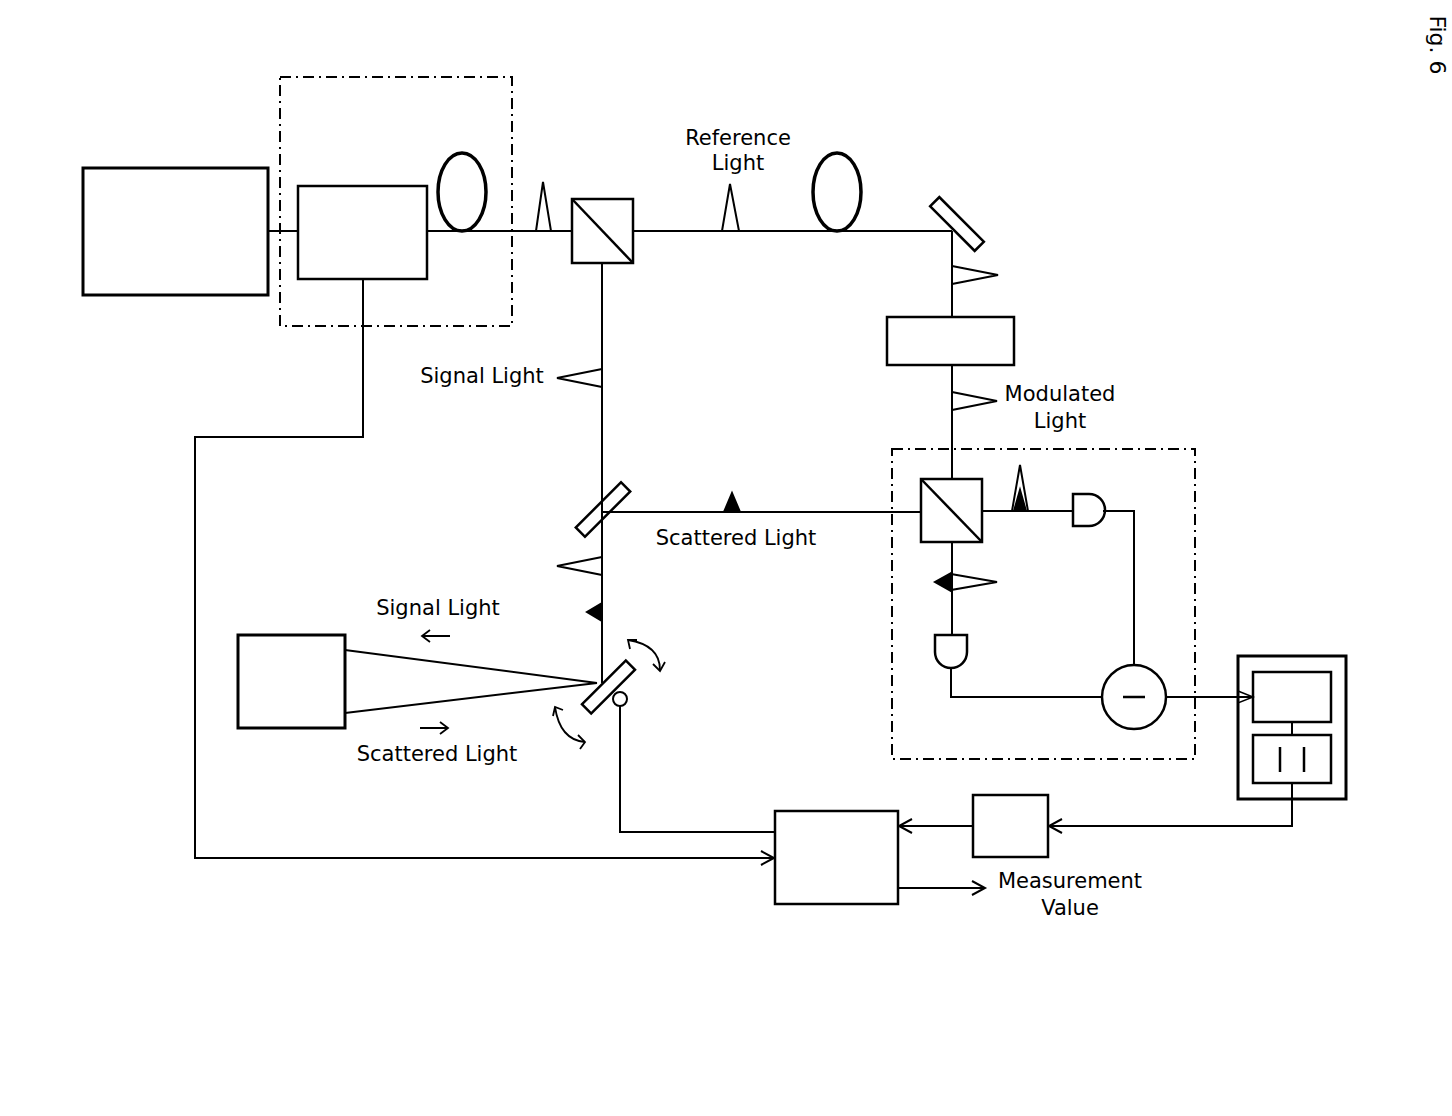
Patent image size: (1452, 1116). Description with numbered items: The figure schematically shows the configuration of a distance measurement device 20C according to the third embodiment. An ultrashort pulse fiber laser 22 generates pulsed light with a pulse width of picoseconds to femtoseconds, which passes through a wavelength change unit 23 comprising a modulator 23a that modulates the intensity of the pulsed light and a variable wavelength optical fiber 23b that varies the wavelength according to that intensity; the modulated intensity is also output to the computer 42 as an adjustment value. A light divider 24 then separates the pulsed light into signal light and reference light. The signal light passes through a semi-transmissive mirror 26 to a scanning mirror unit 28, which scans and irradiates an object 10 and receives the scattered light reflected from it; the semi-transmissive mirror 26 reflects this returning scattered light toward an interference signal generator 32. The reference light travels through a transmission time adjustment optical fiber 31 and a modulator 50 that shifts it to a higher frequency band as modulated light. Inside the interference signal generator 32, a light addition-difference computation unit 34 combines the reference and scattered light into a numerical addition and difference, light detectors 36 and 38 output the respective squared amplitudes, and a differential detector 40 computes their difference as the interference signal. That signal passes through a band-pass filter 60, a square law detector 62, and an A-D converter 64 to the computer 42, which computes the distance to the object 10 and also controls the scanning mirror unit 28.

The distance measurement device 20C is at (1088, 152).
The ultrashort pulse fiber laser 22 is at (147, 168).
The wavelength change unit 23 is at (296, 77).
The modulator 23a is at (330, 186).
The variable wavelength optical fiber 23b is at (455, 154).
The light divider 24 is at (603, 199).
The transmission time adjustment optical fiber 31 is at (852, 162).
The modulator 50 is at (1014, 340).
The interference signal generator 32 is at (1165, 449).
The light addition-difference computation unit 34 is at (921, 505).
The light detector 36 is at (1095, 495).
The light detector 38 is at (967, 652).
The differential detector 40 is at (1152, 668).
The semi-transmissive mirror 26 is at (622, 482).
The scanning mirror unit 28 is at (630, 683).
The object 10 is at (290, 635).
The computer 42 is at (803, 811).
The band-pass filter 60 is at (1331, 697).
The square law detector 62 is at (1331, 761).
The A-D converter 64 is at (1048, 808).